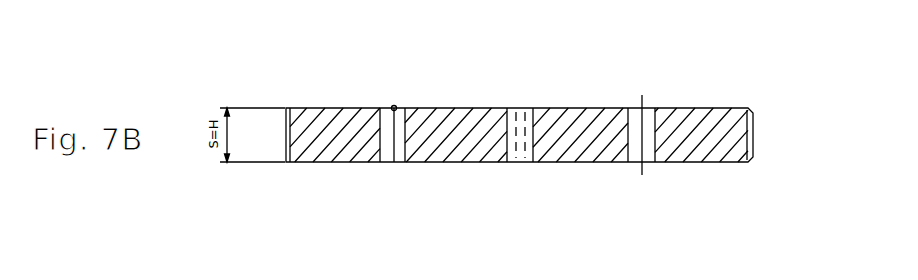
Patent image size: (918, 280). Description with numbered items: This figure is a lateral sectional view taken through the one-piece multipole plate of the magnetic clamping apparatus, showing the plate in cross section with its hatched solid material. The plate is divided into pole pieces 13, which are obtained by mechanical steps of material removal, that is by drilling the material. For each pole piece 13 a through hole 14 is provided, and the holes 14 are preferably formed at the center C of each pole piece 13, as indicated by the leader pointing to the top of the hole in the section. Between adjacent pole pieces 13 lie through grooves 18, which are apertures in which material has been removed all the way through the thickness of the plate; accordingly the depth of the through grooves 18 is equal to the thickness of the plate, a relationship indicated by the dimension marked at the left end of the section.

The pole piece 13 is at (305, 162).
The through hole 14 is at (395, 165).
The through groove 18 is at (525, 162).
The center C is at (395, 105).